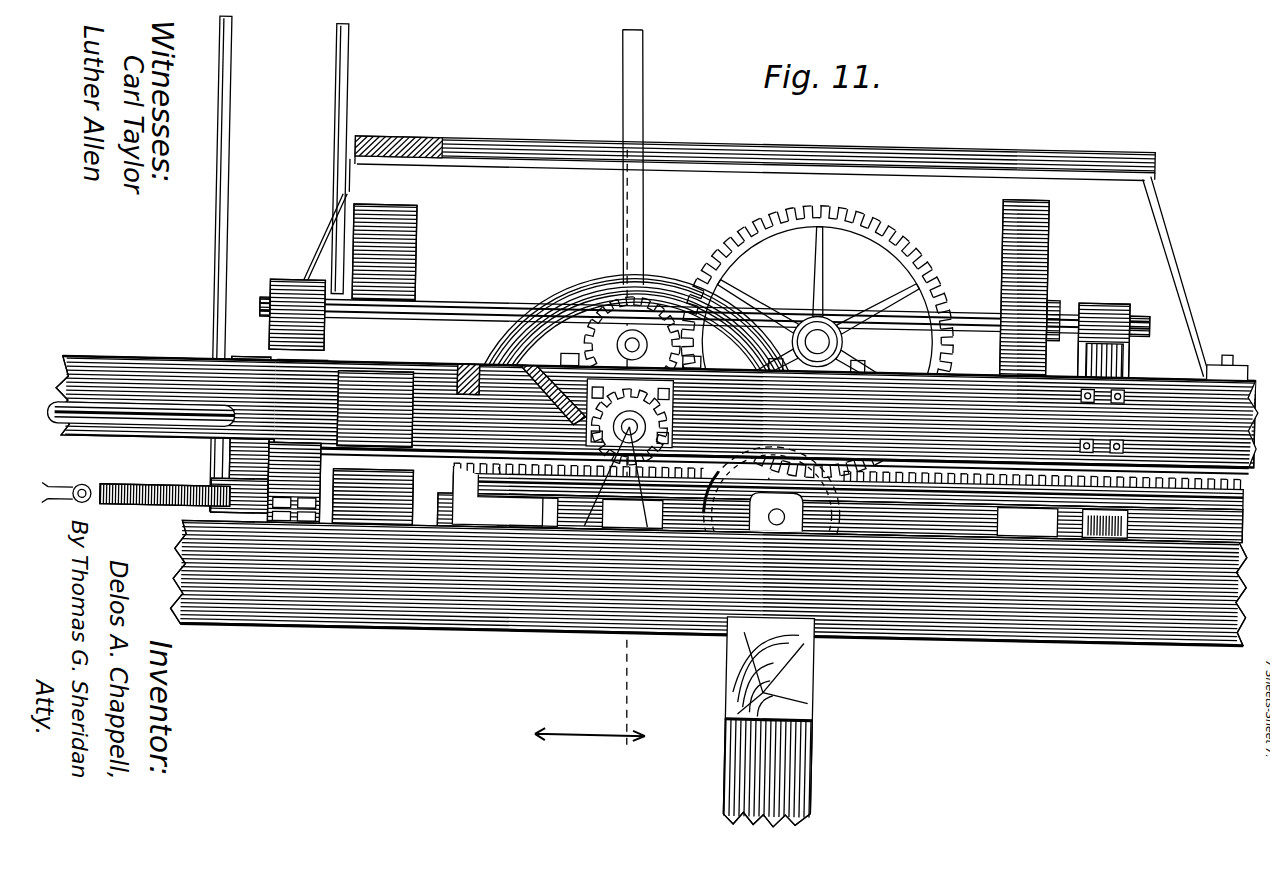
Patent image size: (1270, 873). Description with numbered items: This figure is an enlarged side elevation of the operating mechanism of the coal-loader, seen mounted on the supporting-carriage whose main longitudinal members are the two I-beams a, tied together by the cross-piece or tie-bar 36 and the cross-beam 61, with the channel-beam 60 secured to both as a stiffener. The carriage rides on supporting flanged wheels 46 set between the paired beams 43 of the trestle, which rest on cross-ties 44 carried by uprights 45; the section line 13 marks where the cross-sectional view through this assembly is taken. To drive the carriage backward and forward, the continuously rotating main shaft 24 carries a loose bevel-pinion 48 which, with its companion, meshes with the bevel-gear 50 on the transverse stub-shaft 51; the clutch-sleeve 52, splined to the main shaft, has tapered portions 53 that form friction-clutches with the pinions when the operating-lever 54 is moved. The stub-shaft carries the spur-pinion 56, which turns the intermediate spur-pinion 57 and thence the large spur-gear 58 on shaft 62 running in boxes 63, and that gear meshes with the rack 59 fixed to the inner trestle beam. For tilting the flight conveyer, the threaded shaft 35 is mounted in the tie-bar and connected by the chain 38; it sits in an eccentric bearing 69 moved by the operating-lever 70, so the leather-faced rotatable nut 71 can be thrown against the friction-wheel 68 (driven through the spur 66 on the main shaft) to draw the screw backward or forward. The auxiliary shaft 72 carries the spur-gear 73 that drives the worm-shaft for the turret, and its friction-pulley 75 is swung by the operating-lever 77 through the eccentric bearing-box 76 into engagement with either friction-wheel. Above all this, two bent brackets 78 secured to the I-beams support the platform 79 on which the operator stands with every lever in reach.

The section line 13 is at (589, 744).
The main shaft 24 is at (138, 436).
The threaded shaft 35 is at (140, 516).
The cross-piece or tie-bar 36 is at (290, 368).
The chain 38 is at (84, 496).
The beams 43 is at (288, 634).
The cross-ties 44 is at (786, 525).
The uprights 45 is at (804, 765).
The supporting flanged wheels 46 is at (770, 445).
The bevel-pinion 48 is at (478, 368).
The bevel-gear 50 is at (548, 300).
The stub-shaft 51 is at (597, 493).
The clutch-sleeve 52 is at (590, 368).
The tapered portions 53 is at (582, 400).
The operating-lever 54 is at (617, 118).
The spur-pinion 56 is at (649, 495).
The intermediate spur-pinion 57 is at (622, 300).
The spur-gear 58 is at (817, 335).
The rack 59 is at (876, 490).
The channel-beam 60 is at (452, 456).
The cross-beam 61 is at (1110, 330).
The shaft 62 is at (822, 334).
The boxes 63 is at (795, 320).
The spur 66 is at (240, 390).
The friction-wheel 68 is at (375, 409).
The eccentric bearing 69 is at (232, 502).
The operating-lever 70 is at (212, 262).
The rotatable nut 71 is at (373, 509).
The auxiliary shaft 72 is at (462, 306).
The spur-gear 73 is at (1040, 245).
The friction-pulley 75 is at (405, 280).
The eccentric bearing-box 76 is at (270, 288).
The operating-lever 77 is at (329, 194).
The brackets 78 is at (318, 262).
The platform 79 is at (751, 239).
The I-beams a is at (98, 372).